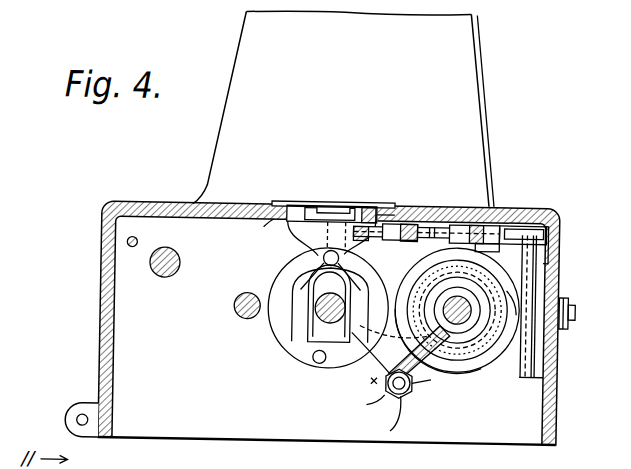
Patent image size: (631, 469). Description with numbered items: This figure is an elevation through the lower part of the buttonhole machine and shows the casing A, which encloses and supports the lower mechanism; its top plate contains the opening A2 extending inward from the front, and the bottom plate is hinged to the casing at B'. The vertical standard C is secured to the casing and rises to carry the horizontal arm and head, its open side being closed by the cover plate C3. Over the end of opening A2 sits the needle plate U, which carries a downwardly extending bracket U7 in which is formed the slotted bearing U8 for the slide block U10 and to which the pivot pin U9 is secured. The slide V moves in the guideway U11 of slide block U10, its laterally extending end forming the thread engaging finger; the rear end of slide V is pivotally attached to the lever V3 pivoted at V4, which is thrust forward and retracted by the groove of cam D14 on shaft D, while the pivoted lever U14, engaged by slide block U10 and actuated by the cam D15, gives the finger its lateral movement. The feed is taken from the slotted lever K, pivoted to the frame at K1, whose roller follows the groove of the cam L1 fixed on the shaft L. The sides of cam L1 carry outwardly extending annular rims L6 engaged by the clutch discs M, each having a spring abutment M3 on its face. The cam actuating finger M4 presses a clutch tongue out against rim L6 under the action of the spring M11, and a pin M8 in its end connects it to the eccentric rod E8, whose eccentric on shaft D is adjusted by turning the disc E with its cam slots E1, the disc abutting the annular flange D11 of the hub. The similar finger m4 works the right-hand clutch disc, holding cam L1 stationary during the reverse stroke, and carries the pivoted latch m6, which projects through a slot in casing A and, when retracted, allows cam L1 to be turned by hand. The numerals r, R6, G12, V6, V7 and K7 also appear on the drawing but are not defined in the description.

The casing A is at (101, 342).
The opening A2 is at (262, 228).
The hinge of bottom plate B' is at (63, 419).
The vertical standard C is at (342, 108).
The cover plate C3 is at (481, 105).
The small hole r is at (136, 245).
The shaft hole R6 is at (182, 253).
The shaft hole G12 is at (234, 307).
The needle plate U is at (389, 197).
The bracket U7 is at (312, 241).
The slotted bearing U8 is at (302, 204).
The pivot pin U9 is at (316, 259).
The slide block U10 is at (315, 204).
The guideway U11 is at (357, 204).
The pivoted lever U14 is at (340, 265).
The slide V is at (331, 208).
The lever V3 is at (420, 239).
The pivot V4 is at (501, 215).
The slide bar collar V6 is at (414, 224).
The slide bar pin V7 is at (421, 241).
The slotted lever K is at (533, 211).
The pivot of lever K K1 is at (536, 253).
The bracket lug K7 is at (507, 243).
The shaft L is at (546, 288).
The cam L1 is at (499, 274).
The annular rims L6 is at (483, 357).
The clutch disc M is at (479, 258).
The spring abutment M3 is at (379, 397).
The cam actuating finger M4 is at (418, 353).
The pin M8 is at (400, 397).
The spring M11 is at (423, 394).
The finger m4 is at (560, 323).
The pivoted latch m6 is at (572, 306).
The shaft D is at (320, 328).
The annular flange D11 is at (371, 378).
The cam D14 is at (314, 364).
The cam D15 is at (312, 300).
The disc E is at (154, 464).
The cam slots E1 is at (176, 468).
The eccentric rod E8 is at (362, 408).